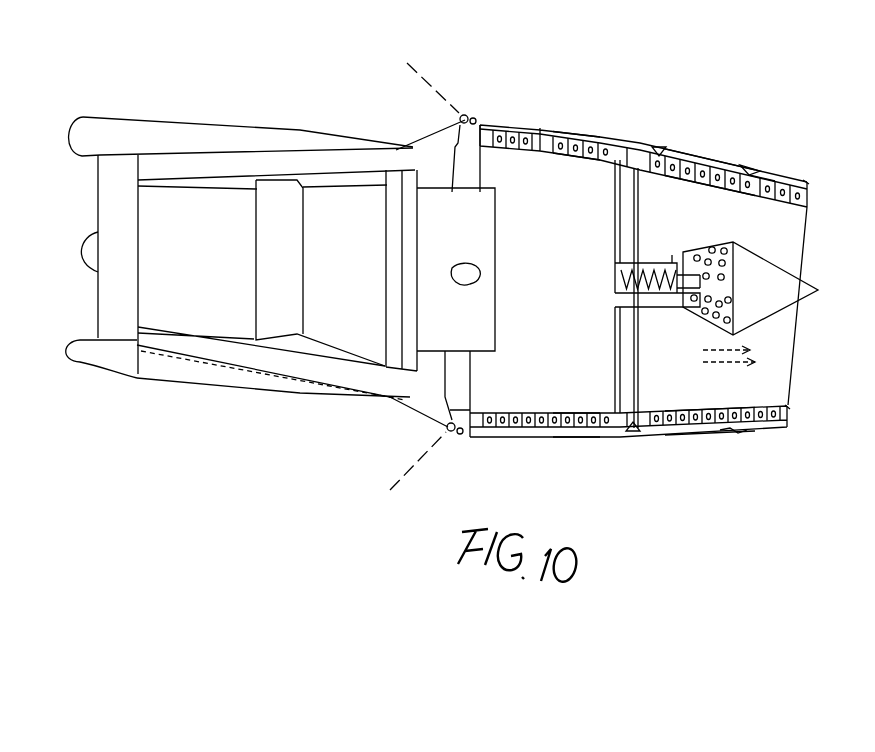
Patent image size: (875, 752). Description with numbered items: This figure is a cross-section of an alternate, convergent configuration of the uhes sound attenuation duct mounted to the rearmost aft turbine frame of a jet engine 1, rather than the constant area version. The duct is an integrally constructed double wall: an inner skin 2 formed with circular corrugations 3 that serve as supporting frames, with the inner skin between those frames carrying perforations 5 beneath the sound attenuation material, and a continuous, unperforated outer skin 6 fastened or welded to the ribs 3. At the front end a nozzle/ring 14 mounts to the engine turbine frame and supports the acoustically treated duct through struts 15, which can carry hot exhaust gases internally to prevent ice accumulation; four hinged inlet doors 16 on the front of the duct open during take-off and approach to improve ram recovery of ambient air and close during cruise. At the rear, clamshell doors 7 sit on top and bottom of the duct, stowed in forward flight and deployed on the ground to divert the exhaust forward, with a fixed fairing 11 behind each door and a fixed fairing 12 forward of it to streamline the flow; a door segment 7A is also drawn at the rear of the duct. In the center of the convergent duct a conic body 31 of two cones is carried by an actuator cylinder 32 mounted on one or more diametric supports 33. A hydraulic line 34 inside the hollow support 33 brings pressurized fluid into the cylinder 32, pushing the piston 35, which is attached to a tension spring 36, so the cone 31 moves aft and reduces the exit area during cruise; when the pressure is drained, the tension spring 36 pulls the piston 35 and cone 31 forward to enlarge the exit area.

The jet engine 1 is at (228, 304).
The inner skin 2 is at (581, 133).
The circular corrugations 3 is at (475, 117).
The perforations 5 is at (496, 152).
The outer skin 6 is at (604, 136).
The clamshell doors 7 is at (716, 159).
The rear panel flap 7A is at (754, 169).
The fixed fairing 11 is at (805, 179).
The fixed fairing 12 is at (600, 135).
The nozzle/ring 14 is at (498, 306).
The struts 15 is at (465, 185).
The hinged inlet doors 16 is at (427, 133).
The conic body 31 is at (709, 243).
The actuator cylinder 32 is at (643, 309).
The diametric supports 33 is at (612, 203).
The hydraulic line 34 is at (616, 358).
The piston 35 is at (672, 256).
The tension spring 36 is at (614, 279).